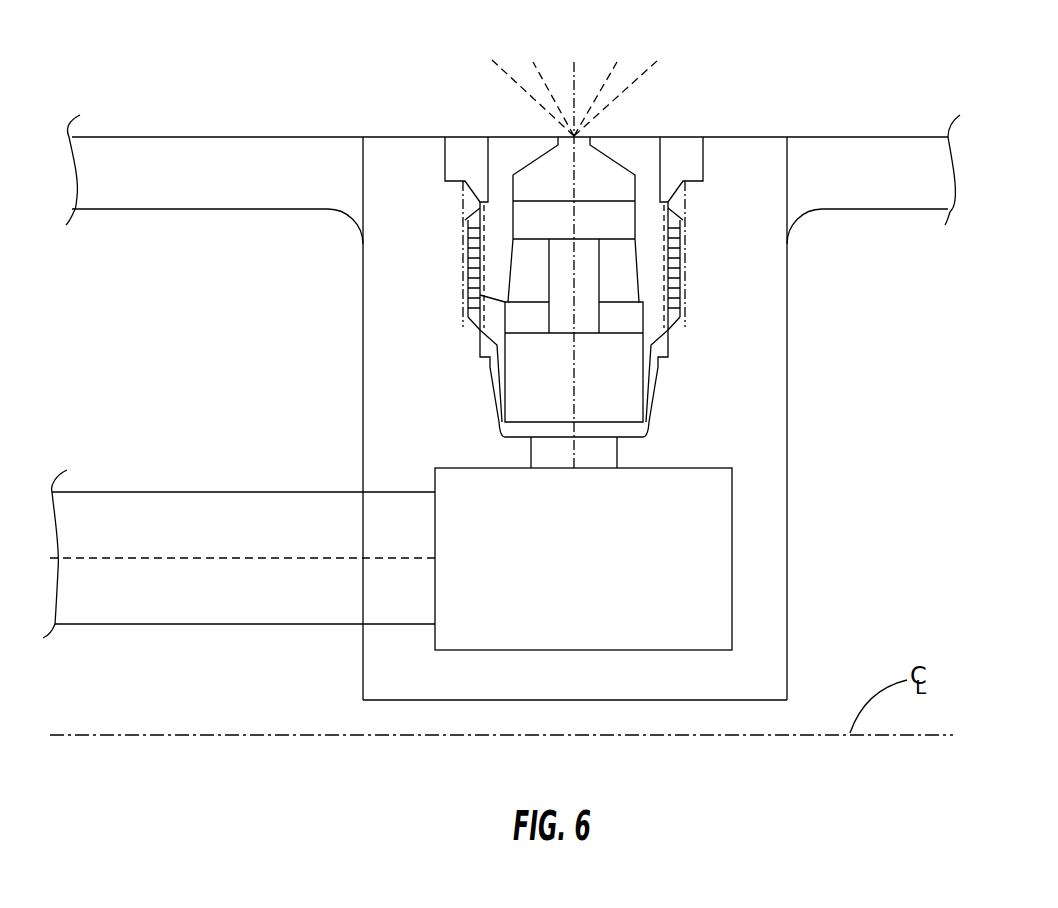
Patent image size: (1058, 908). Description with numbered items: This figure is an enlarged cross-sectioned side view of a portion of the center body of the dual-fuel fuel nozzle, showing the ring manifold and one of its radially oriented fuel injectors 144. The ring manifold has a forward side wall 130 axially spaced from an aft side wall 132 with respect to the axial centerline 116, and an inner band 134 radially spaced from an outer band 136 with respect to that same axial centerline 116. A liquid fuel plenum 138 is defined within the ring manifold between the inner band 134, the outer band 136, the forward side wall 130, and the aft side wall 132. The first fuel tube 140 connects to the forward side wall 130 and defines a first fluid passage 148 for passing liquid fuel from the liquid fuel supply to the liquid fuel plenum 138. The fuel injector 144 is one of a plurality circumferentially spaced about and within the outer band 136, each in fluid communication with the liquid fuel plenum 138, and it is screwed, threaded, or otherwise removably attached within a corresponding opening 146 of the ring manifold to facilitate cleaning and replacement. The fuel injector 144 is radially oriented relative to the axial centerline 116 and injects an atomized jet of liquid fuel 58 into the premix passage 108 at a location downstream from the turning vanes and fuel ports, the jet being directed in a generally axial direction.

The premix passage 108 is at (587, 29).
The spray 58 is at (640, 80).
The radially oriented fuel injector 144 is at (658, 147).
The outer band 136 is at (402, 135).
The forward side wall 130 is at (363, 293).
The aft side wall 132 is at (787, 347).
The inner band 134 is at (437, 700).
The opening 146 is at (475, 332).
The first fuel tube 140 is at (177, 492).
The first fluid passage 148 is at (267, 535).
The liquid fuel plenum 138 is at (601, 573).
The axial centerline 116 is at (897, 737).